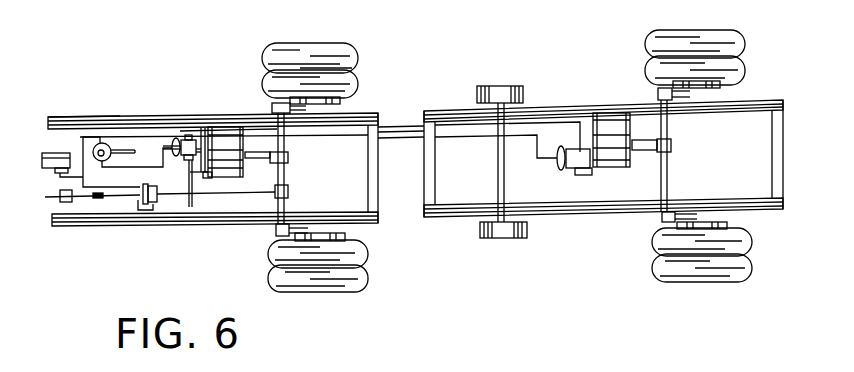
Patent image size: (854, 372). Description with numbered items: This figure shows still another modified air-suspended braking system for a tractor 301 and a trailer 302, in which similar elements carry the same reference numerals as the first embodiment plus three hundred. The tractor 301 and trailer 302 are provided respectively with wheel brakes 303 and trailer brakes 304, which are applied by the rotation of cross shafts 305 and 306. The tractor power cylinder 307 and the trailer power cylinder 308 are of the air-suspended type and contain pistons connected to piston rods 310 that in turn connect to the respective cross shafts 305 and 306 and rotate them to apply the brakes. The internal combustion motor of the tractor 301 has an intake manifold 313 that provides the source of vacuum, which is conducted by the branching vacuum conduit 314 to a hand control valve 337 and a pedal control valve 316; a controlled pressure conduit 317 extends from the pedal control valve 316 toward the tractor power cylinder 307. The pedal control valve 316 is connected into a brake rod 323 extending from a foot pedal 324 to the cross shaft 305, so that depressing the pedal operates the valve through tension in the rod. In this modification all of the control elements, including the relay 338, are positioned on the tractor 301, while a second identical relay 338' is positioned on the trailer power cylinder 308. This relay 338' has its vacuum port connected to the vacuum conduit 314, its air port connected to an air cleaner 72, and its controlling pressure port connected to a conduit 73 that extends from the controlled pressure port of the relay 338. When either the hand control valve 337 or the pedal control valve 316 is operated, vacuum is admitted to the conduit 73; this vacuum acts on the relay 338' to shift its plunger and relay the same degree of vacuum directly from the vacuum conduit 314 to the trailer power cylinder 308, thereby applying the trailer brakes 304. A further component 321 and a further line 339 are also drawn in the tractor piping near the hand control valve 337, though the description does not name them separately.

The tractor 301 is at (250, 84).
The trailer 302 is at (616, 74).
The wheel brakes 303 is at (337, 96).
The trailer brakes 304 is at (720, 84).
The cross shaft 305 is at (287, 193).
The cross shaft 306 is at (669, 127).
The tractor power cylinder 307 is at (223, 143).
The trailer power cylinder 308 is at (610, 133).
The piston rods 310 is at (282, 158).
The intake manifold 313 is at (50, 169).
The vacuum conduit 314 is at (78, 118).
The pedal control valve 316 is at (148, 207).
The controlled pressure conduit 317 is at (192, 208).
The pressure regulator 321 is at (114, 143).
The brake rod 323 is at (235, 193).
The foot pedal 324 is at (68, 198).
The hand control valve 337 is at (83, 138).
The relay 338 is at (182, 120).
The second identical relay 338' is at (597, 172).
The air line 339 is at (148, 163).
The air cleaner 72 is at (581, 175).
The conduit 73 is at (394, 140).